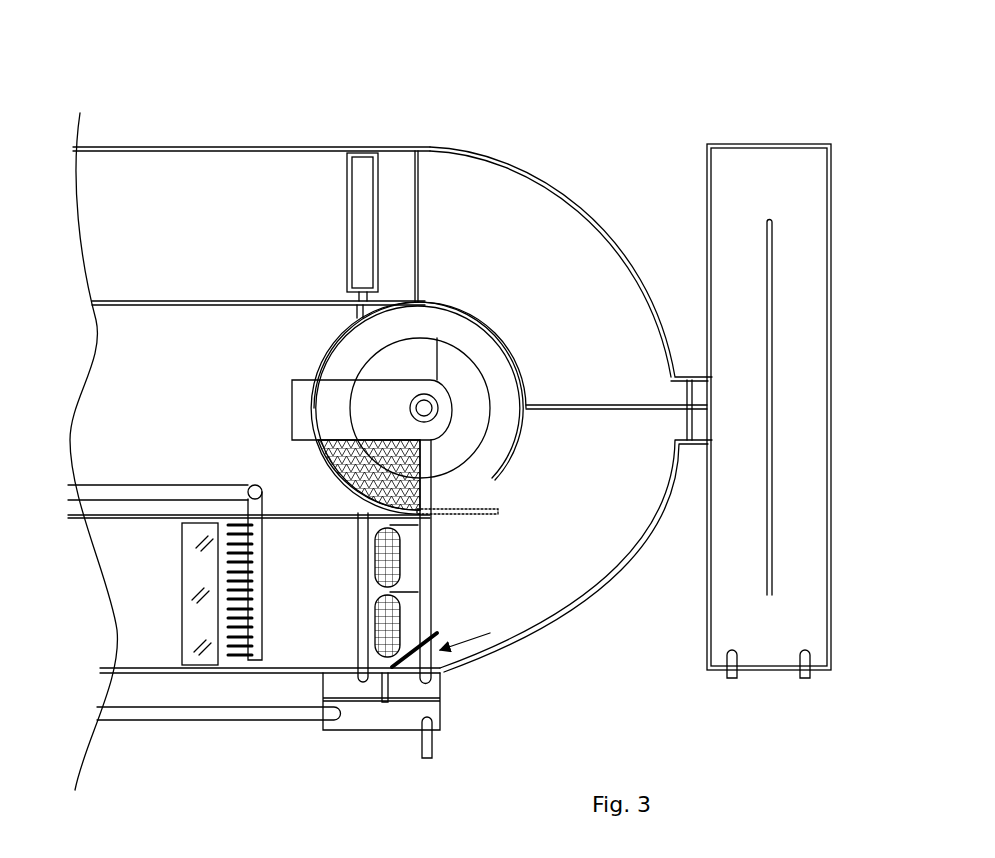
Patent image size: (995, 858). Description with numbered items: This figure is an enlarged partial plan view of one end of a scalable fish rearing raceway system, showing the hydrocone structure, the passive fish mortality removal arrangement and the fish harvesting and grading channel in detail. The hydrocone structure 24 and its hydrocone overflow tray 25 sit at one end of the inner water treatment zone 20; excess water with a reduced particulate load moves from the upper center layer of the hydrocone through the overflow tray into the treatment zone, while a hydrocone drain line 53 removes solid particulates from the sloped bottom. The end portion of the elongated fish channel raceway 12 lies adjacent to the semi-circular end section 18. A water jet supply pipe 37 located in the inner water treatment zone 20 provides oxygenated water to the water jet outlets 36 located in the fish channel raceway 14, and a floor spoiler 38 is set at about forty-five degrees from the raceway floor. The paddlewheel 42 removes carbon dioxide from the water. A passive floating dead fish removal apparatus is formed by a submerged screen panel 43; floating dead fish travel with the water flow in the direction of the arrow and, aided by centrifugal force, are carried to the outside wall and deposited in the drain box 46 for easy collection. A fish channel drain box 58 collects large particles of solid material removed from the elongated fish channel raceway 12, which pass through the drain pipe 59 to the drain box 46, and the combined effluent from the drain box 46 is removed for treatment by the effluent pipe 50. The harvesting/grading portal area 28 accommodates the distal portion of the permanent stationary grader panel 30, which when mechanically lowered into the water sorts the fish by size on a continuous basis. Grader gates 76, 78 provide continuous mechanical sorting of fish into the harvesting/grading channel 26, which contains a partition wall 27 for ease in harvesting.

The elongated fish channel raceway 12 is at (170, 177).
The fish channel raceway 14 is at (143, 615).
The semi-circular end section 18 is at (463, 212).
The inner water treatment zone 20 is at (132, 350).
The hydrocone structure 24 is at (562, 438).
The hydrocone overflow tray 25 is at (410, 430).
The harvesting/grading channel 26 is at (791, 173).
The partition wall 27 is at (768, 595).
The harvesting/grading portal area 28 is at (640, 125).
The permanent stationary grader panel 30 is at (617, 407).
The water jet outlets 36 is at (257, 640).
The water jet supply pipe 37 is at (137, 497).
The floor spoiler 38 is at (193, 578).
The paddlewheel 42 is at (470, 655).
The submerged screen panel 43 is at (417, 645).
The drain box 46 is at (393, 718).
The effluent pipe 50 is at (150, 713).
The hydrocone drain line 53 is at (428, 680).
The fish channel drain box 58 is at (360, 250).
The drain pipe for the fish channel drain box 59 is at (350, 603).
The grader gate 76 is at (637, 528).
The grader gate 78 is at (698, 392).